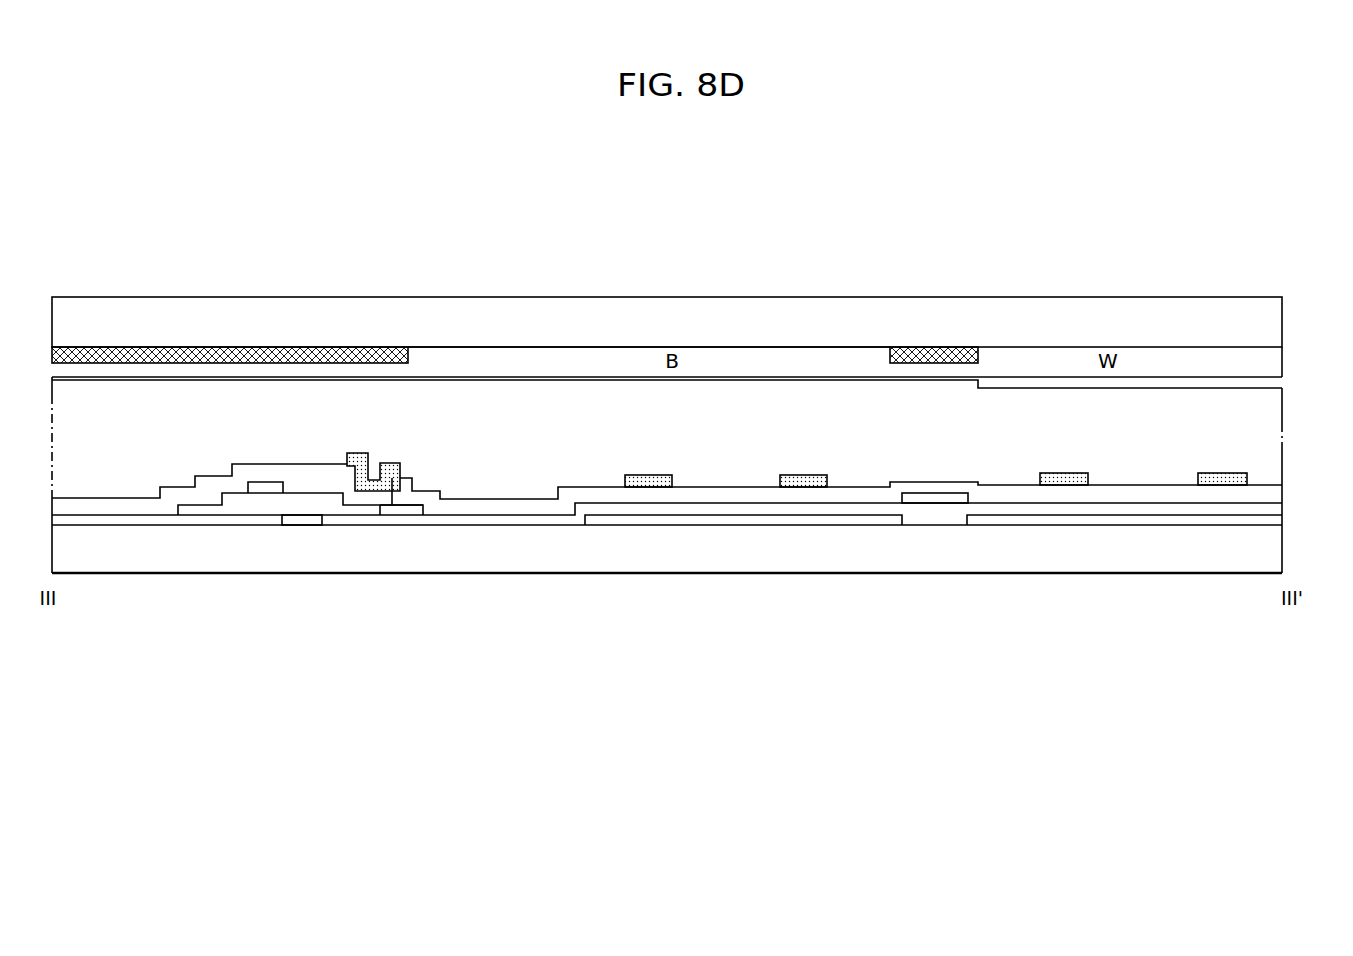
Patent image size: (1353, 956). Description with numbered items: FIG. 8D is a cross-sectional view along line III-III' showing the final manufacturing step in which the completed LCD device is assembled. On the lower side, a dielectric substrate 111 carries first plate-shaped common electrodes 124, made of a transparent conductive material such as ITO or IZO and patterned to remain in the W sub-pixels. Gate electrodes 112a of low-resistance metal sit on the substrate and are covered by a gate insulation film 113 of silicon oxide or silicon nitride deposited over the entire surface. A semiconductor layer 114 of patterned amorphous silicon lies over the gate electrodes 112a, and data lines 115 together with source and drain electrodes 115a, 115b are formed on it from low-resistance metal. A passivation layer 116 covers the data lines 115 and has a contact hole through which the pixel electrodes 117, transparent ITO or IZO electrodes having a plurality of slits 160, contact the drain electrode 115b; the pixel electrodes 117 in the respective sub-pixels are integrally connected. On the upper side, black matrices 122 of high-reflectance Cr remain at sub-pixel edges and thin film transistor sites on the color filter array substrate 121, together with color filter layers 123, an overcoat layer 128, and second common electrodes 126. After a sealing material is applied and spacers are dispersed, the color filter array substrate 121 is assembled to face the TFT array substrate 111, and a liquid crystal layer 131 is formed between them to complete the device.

The color filter array substrate 121 is at (1275, 318).
The black matrices 122 is at (380, 348).
The color filter layers 123 is at (843, 353).
The overcoat layer 128 is at (1275, 362).
The second common electrodes 126 is at (1275, 384).
The liquid crystal layer 131 is at (1275, 420).
The pixel electrodes 117 is at (1240, 472).
The passivation layer 116 is at (387, 470).
The slits 160 is at (1093, 470).
The gate insulation film 113 is at (1273, 507).
The semiconductor layer 114 is at (302, 492).
The source electrode 115a is at (263, 488).
The drain electrode 115b is at (410, 510).
The data lines 115 is at (927, 497).
The first plate-shaped common electrodes 124 is at (1275, 522).
The gate electrodes 112a is at (302, 525).
The dielectric substrate 111 is at (1275, 558).